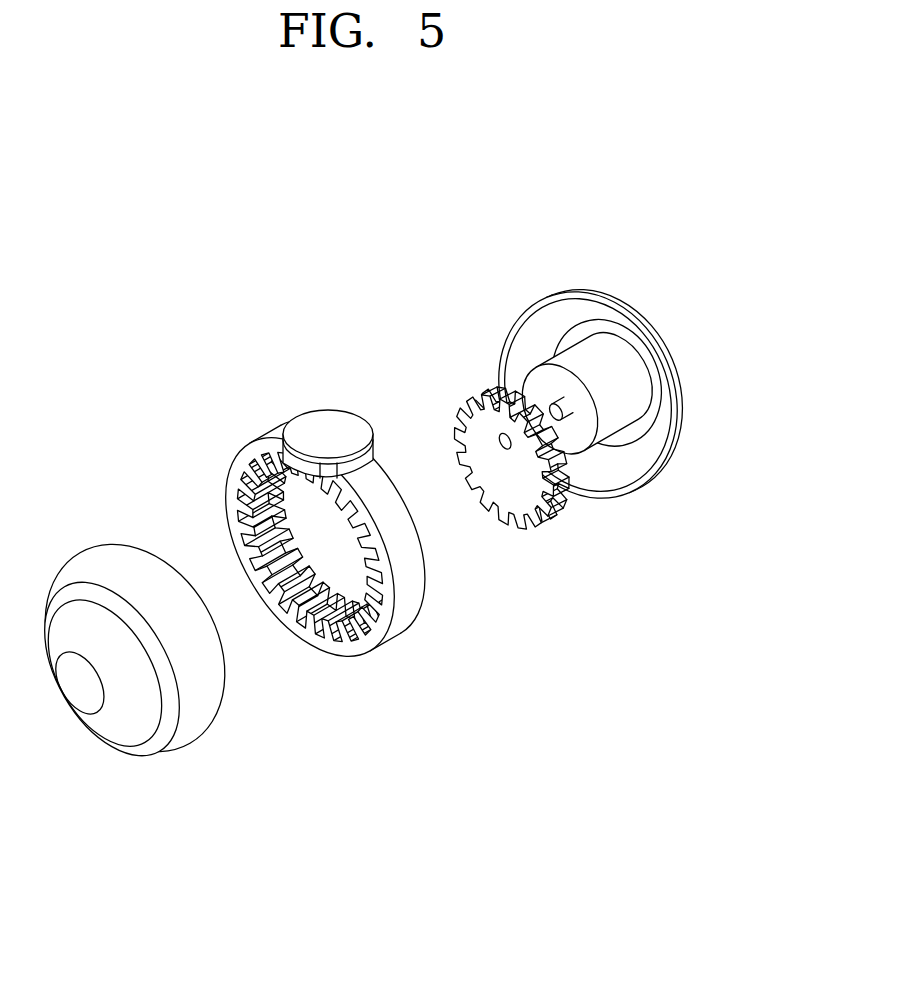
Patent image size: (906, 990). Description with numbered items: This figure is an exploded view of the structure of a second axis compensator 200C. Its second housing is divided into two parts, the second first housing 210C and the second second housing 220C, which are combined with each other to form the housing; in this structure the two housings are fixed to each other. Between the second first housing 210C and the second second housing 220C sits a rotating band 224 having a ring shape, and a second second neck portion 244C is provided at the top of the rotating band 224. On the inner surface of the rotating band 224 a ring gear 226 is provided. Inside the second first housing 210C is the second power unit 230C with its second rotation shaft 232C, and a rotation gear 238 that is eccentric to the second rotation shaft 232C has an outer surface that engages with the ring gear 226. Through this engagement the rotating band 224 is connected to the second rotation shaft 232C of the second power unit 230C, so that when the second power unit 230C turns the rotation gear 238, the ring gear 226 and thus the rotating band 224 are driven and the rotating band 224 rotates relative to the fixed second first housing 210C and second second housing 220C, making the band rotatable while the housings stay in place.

The second axis compensator 200C is at (204, 336).
The second first housing 210C is at (676, 447).
The second second housing 220C is at (175, 752).
The rotating band 224 is at (392, 633).
The ring gear 226 is at (333, 648).
The second power unit 230C is at (472, 362).
The second rotation shaft 232C is at (551, 408).
The rotation gear 238 is at (540, 530).
The second second neck portion 244C is at (320, 415).